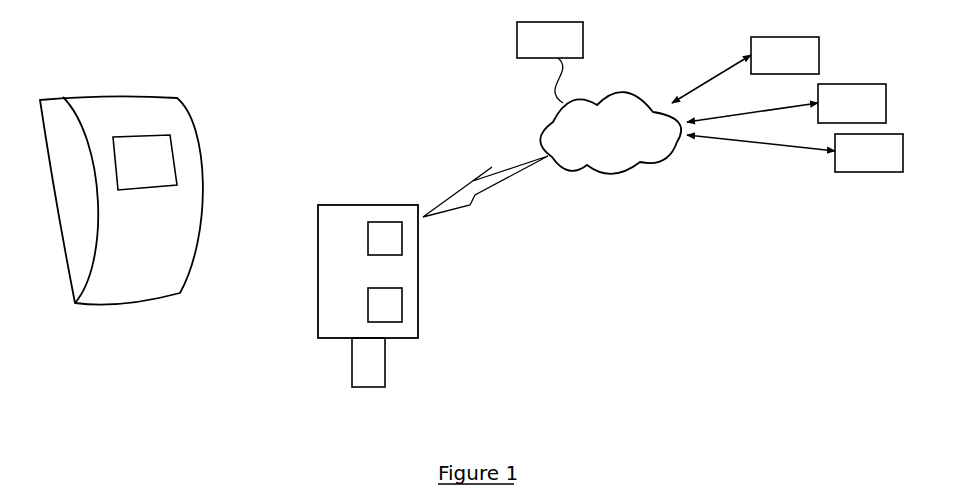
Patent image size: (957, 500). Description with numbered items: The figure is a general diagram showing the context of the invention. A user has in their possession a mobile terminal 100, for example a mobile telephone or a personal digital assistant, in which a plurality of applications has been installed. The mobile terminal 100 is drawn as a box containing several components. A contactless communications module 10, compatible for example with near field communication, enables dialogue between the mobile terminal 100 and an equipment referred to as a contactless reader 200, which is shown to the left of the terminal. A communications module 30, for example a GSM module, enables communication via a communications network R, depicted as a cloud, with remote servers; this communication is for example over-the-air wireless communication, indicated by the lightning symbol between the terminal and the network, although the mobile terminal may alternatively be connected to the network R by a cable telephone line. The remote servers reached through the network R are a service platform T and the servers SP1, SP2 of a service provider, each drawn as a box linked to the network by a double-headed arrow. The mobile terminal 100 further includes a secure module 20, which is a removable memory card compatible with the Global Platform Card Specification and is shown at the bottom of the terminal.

The contactless reader 200 is at (127, 98).
The mobile terminal 100 is at (411, 259).
The communications module 30 is at (402, 252).
The contactless communications module 10 is at (402, 302).
The secure module 20 is at (385, 367).
The communications network R is at (550, 62).
The service platform T is at (785, 55).
The server of a service provider SP1 is at (852, 103).
The server of a service provider SP2 is at (869, 153).